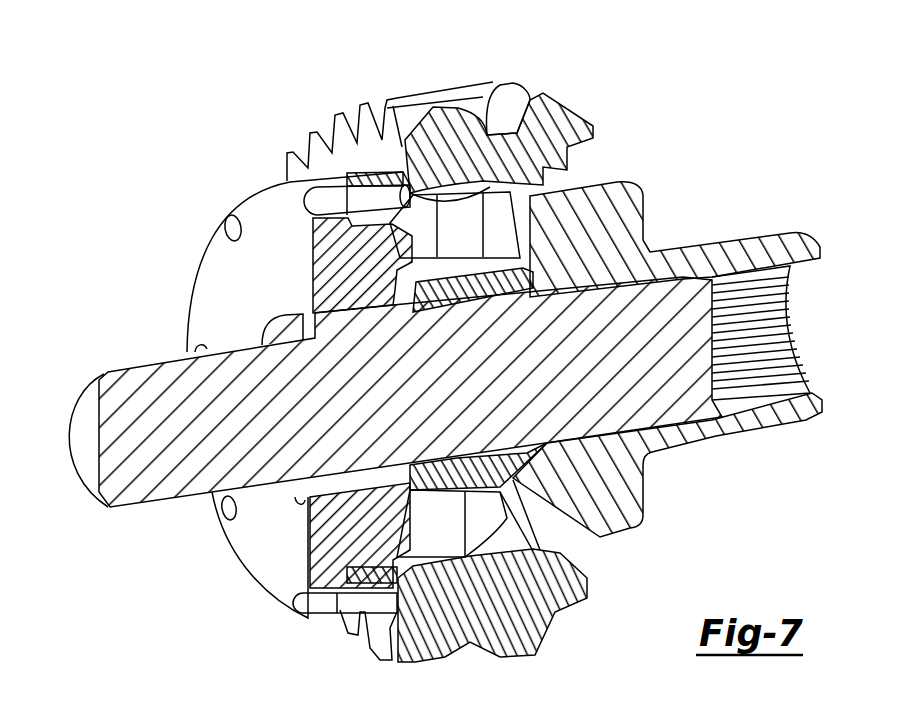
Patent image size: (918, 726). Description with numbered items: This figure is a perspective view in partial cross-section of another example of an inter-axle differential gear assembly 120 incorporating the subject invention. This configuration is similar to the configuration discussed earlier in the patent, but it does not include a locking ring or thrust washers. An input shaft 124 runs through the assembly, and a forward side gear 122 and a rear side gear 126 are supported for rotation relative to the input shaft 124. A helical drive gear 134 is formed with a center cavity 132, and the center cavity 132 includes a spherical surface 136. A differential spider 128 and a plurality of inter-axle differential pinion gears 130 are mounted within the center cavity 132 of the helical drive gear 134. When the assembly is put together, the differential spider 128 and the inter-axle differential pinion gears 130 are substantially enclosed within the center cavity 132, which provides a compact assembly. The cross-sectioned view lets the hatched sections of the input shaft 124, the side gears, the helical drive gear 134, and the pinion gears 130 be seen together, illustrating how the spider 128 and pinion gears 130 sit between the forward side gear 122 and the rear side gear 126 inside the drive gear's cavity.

The inter-axle differential gear assembly 120 is at (711, 130).
The forward side gear 122 is at (268, 562).
The input shaft 124 is at (133, 494).
The rear side gear 126 is at (608, 494).
The differential spider 128 is at (528, 272).
The inter-axle differential pinion gears 130 is at (505, 212).
The center cavity 132 is at (503, 548).
The helical drive gear 134 is at (440, 650).
The spherical surface 136 is at (494, 197).